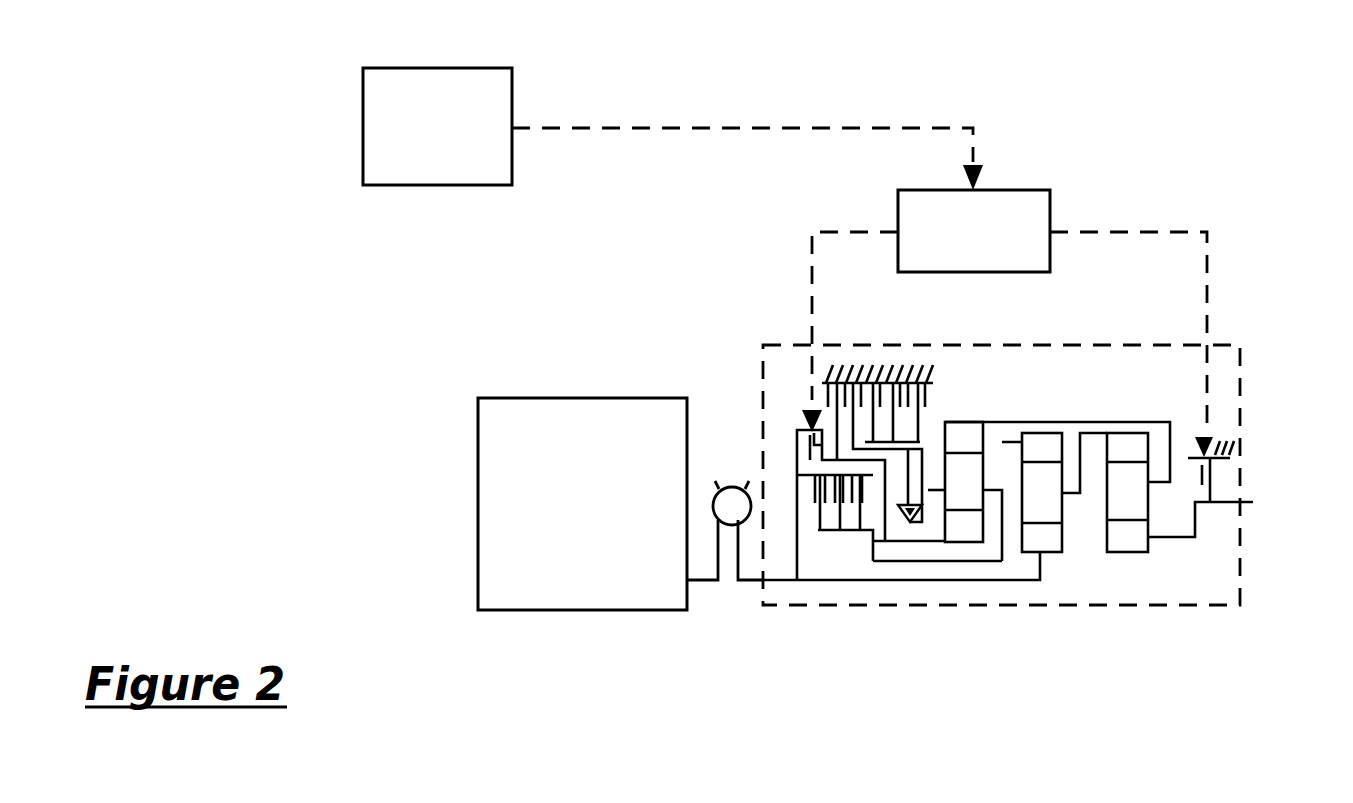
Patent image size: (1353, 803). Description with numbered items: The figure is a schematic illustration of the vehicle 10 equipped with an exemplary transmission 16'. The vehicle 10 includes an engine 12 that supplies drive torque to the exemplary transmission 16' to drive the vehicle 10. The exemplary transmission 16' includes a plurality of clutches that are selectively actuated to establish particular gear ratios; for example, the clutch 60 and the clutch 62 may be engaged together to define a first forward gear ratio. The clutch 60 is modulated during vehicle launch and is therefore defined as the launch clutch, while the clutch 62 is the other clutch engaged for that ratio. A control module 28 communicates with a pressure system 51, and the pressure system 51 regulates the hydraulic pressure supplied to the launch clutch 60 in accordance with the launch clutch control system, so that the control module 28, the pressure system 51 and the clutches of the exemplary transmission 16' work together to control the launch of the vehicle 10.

The vehicle 10 is at (152, 215).
The engine 12 is at (548, 610).
The exemplary transmission 16' is at (1055, 524).
The control module 28 is at (415, 68).
The pressure system 51 is at (1022, 190).
The clutch 60 is at (1215, 478).
The clutch 62 is at (903, 522).